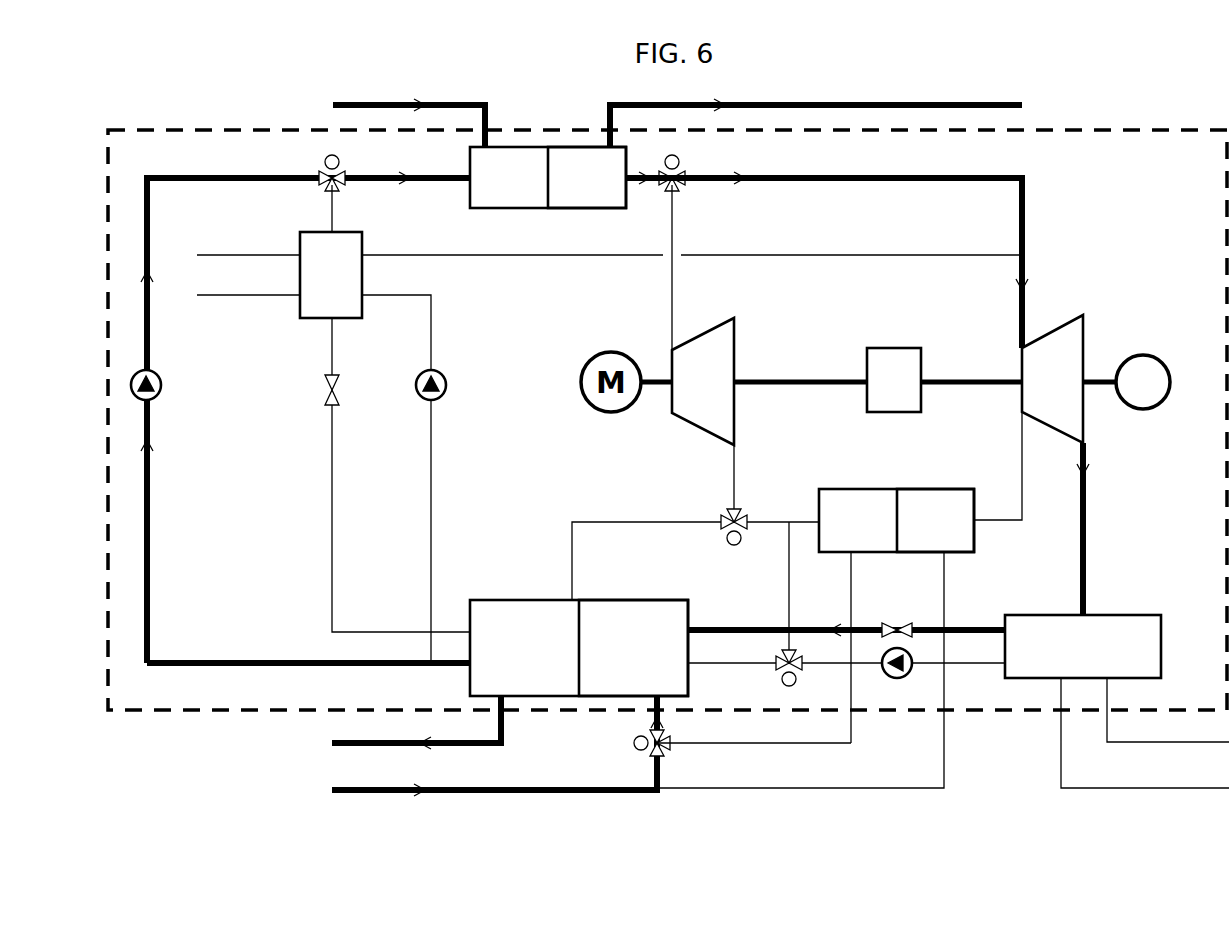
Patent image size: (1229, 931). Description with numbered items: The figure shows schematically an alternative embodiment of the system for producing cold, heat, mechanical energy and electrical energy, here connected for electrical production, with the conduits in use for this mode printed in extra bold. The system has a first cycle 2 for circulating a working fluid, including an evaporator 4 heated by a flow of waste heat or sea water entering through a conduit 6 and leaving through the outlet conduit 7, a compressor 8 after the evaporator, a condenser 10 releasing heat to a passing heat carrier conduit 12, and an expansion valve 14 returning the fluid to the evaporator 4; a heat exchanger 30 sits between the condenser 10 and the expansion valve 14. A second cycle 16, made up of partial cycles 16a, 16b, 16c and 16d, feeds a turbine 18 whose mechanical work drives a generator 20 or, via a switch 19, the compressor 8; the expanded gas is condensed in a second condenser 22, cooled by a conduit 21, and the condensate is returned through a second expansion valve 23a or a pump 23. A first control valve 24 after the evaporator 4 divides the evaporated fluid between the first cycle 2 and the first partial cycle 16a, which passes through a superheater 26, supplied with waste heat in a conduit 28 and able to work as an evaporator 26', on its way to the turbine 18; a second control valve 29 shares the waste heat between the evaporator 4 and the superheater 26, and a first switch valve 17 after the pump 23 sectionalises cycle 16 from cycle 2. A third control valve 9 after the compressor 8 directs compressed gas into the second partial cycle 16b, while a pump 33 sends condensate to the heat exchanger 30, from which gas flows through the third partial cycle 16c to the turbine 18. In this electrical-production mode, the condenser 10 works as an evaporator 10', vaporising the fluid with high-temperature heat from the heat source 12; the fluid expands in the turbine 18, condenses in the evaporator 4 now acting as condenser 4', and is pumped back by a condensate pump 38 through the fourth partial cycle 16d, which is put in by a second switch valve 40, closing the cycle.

The first cycle 2 is at (386, 184).
The evaporator 4 is at (417, 648).
The condenser 4' is at (633, 648).
The conduit 6 is at (598, 788).
The outlet line 7 is at (386, 746).
The compressor 8 is at (703, 381).
The third control valve 9 is at (681, 160).
The condenser 10 is at (548, 177).
The evaporator 10' is at (587, 177).
The hot or circulating water conduit 12 is at (606, 112).
The expansion valve 14 is at (342, 390).
The second cycle 16 is at (1089, 538).
The first partial cycle 16a is at (612, 521).
The second partial cycle 16b is at (905, 176).
The third partial cycle 16c is at (916, 254).
The fourth partial cycle 16d is at (150, 488).
The first switch valve 17 is at (797, 684).
The turbine 18 is at (1052, 379).
The switch 19 is at (894, 380).
The generator 20 is at (1168, 362).
The conduit 21 is at (250, 295).
The second condenser 22 is at (1083, 646).
The pump 23 is at (898, 680).
The second expansion valve 23a is at (896, 623).
The first control valve 24 is at (732, 548).
The superheater 26 is at (896, 520).
The evaporator 26' is at (935, 520).
The conduit 28 is at (943, 772).
The second control valve 29 is at (665, 753).
The heat exchanger 30 is at (331, 275).
The pump 33 is at (448, 386).
The condensate pump 38 is at (163, 386).
The second switch valve 40 is at (341, 159).